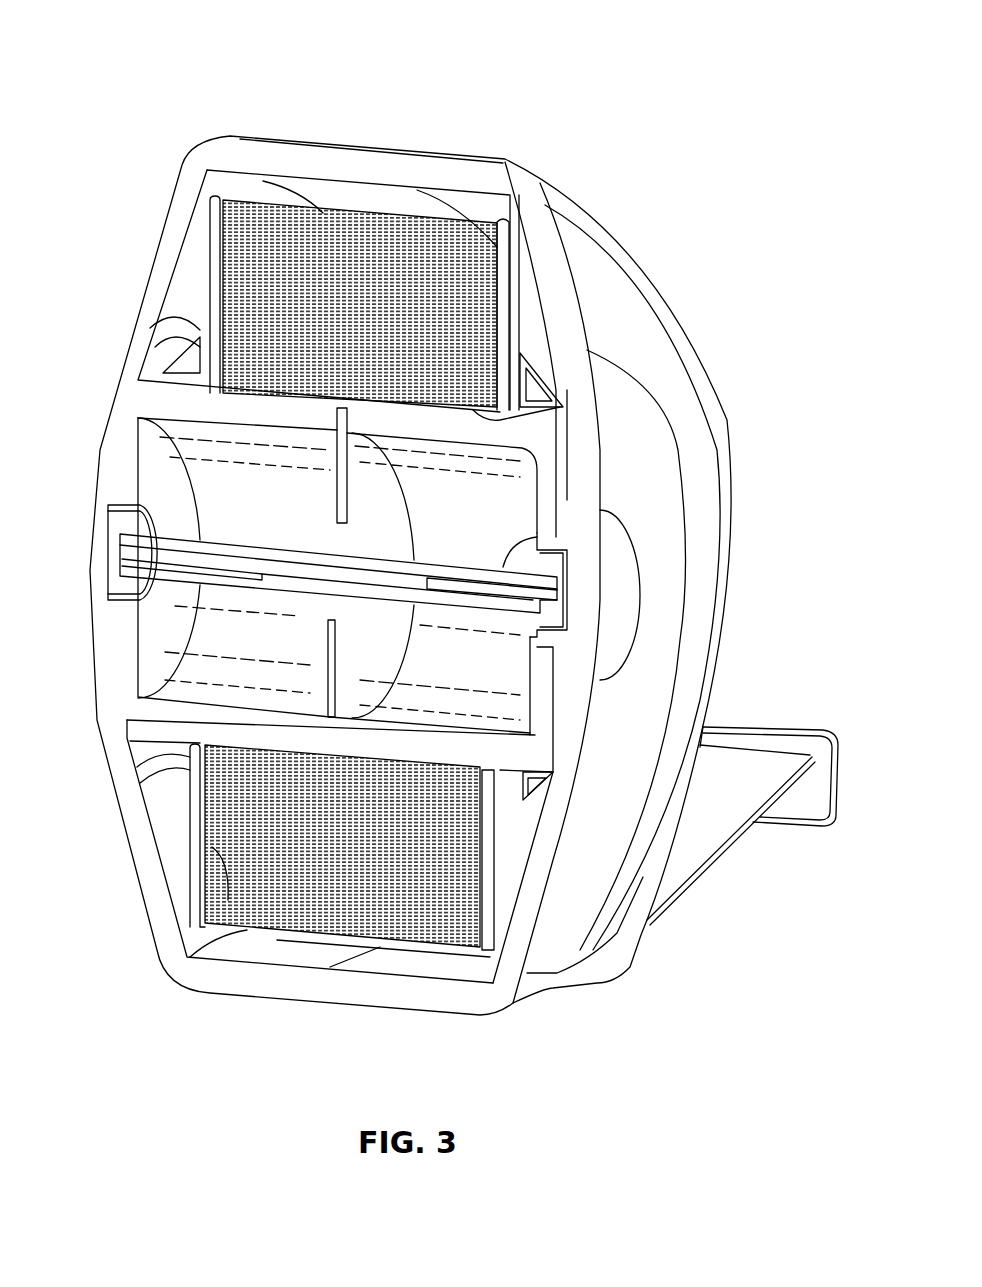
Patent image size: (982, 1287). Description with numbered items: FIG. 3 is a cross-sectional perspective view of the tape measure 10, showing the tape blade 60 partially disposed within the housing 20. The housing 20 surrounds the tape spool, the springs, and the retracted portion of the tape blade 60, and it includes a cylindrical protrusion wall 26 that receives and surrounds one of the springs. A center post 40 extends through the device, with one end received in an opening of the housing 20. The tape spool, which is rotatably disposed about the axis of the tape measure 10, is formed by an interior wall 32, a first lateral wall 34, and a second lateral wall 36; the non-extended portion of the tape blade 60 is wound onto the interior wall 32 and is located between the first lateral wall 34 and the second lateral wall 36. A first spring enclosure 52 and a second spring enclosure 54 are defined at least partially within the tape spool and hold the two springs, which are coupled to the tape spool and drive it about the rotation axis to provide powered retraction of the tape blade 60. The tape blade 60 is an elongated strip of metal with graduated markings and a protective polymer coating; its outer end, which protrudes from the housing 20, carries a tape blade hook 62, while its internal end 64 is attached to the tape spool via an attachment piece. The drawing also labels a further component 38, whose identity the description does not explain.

The tape measure 10 is at (200, 82).
The housing 20 is at (117, 347).
The cylindrical protrusion wall 26 is at (232, 405).
The interior wall 32 is at (343, 415).
The first lateral wall 34 is at (242, 203).
The second lateral wall 36 is at (494, 248).
The end wall 38 is at (540, 479).
The center post 40 is at (537, 543).
The first spring enclosure 52 is at (223, 482).
The second spring enclosure 54 is at (493, 513).
The tape blade 60 is at (210, 296).
The tape blade hook 62 is at (838, 777).
The internal end 64 is at (563, 410).